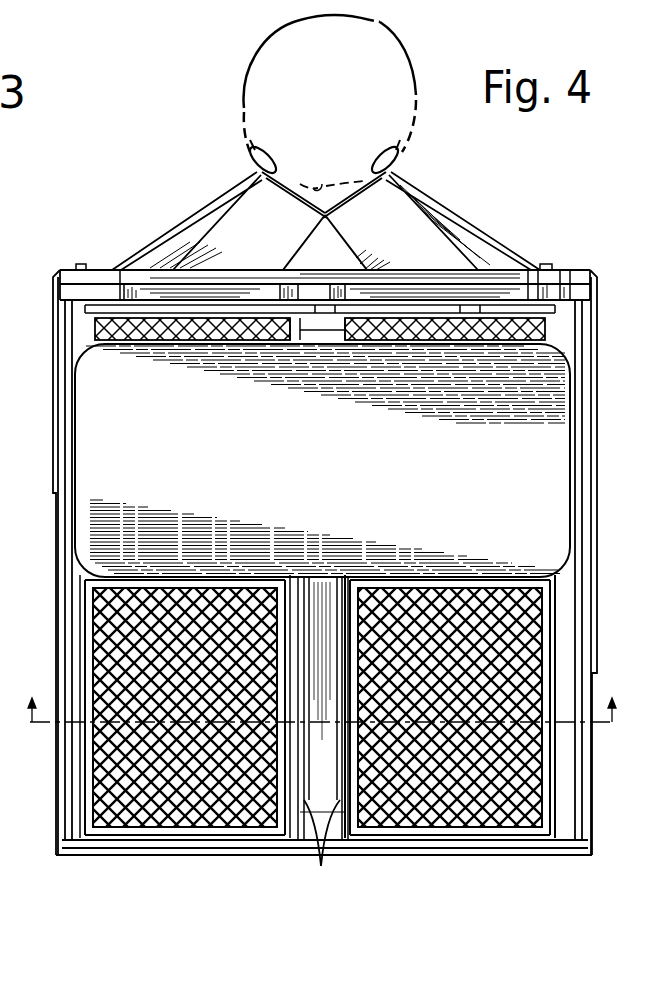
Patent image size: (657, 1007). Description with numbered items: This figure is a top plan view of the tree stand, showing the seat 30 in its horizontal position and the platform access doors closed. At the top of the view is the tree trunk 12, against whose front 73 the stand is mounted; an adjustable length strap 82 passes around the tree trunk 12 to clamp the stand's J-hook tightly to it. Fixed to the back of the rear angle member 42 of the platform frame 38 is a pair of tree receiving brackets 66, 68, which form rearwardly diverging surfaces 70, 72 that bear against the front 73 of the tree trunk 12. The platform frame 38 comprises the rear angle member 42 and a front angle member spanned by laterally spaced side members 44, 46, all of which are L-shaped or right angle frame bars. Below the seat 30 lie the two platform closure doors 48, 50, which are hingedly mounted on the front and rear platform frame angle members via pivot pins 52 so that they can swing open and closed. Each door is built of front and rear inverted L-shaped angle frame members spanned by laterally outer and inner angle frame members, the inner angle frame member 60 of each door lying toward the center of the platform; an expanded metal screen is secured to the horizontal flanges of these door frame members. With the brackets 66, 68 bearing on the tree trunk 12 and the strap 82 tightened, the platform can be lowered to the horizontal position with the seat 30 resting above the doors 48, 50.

The tree trunk 12 is at (326, 698).
The seat 30 is at (344, 490).
The platform frame 38 is at (198, 867).
The rear angle member 42 is at (545, 270).
The side member 44 is at (57, 748).
The side member 46 is at (593, 790).
The platform closure door 48 is at (206, 866).
The platform closure door 50 is at (405, 866).
The pivot pins 52 is at (78, 855).
The inner angle frame member 60 is at (321, 860).
The tree receiving bracket 66 is at (478, 212).
The tree receiving bracket 68 is at (140, 216).
The rearwardly diverging surface 70 is at (400, 147).
The rearwardly diverging surface 72 is at (248, 141).
The front of tree trunk 73 is at (322, 184).
The adjustable length strap 82 is at (242, 86).